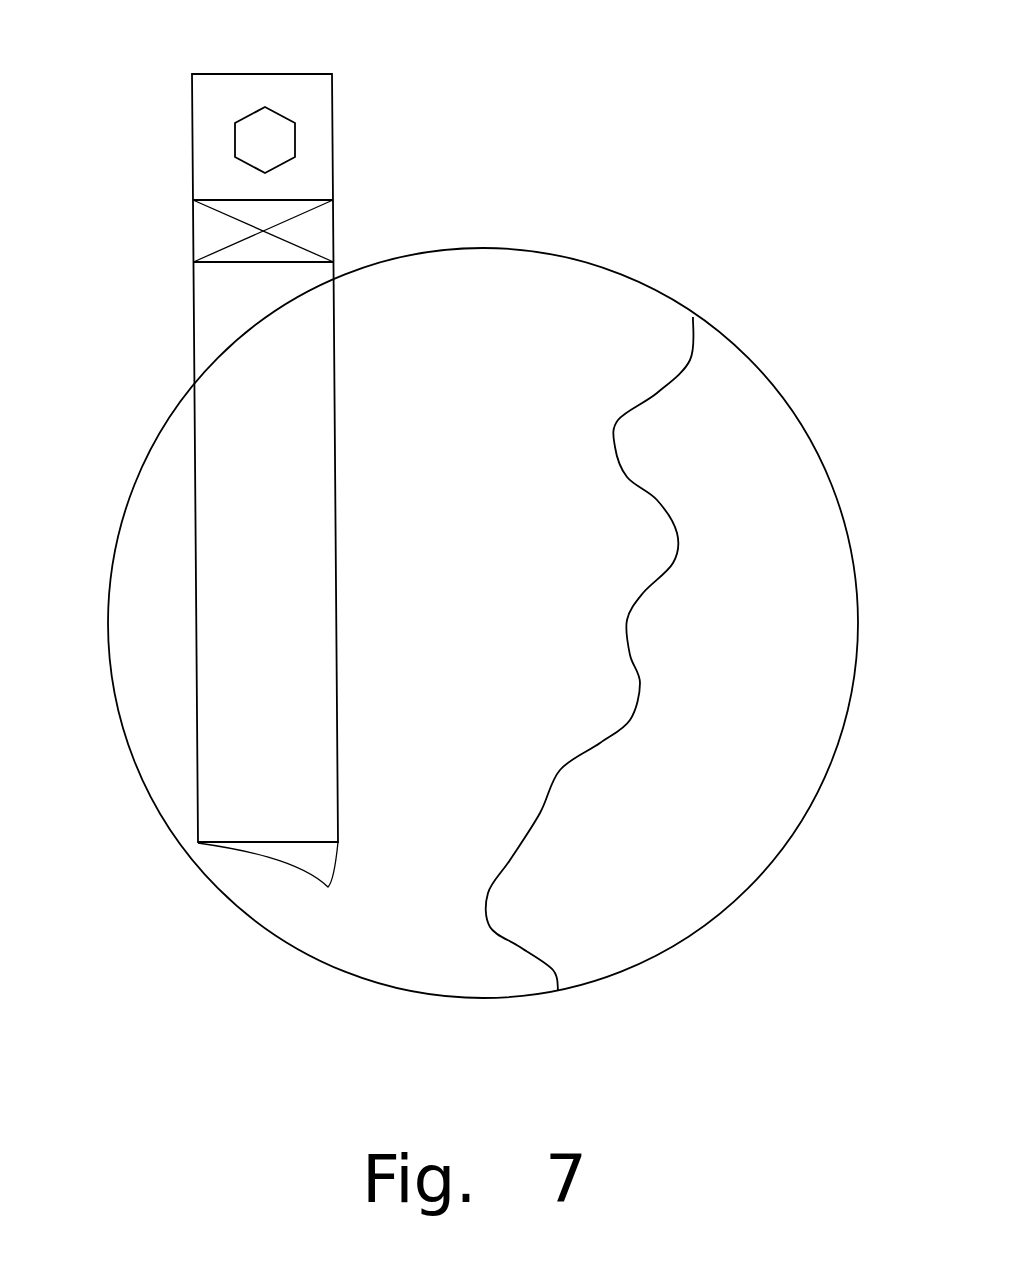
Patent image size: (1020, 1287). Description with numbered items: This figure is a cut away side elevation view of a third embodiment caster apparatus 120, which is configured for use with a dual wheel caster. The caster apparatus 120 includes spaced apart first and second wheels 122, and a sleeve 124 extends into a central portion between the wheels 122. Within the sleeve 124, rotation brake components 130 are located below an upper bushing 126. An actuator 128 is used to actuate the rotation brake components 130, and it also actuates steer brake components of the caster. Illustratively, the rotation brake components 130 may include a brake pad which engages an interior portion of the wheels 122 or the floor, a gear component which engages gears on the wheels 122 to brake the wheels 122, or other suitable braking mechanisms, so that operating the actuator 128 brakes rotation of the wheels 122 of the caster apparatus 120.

The caster apparatus 120 is at (445, 501).
The first and second wheels 122 is at (545, 262).
The sleeve 124 is at (229, 446).
The upper bushing 126 is at (192, 222).
The actuator 128 is at (275, 122).
The rotation brake components 130 is at (240, 620).